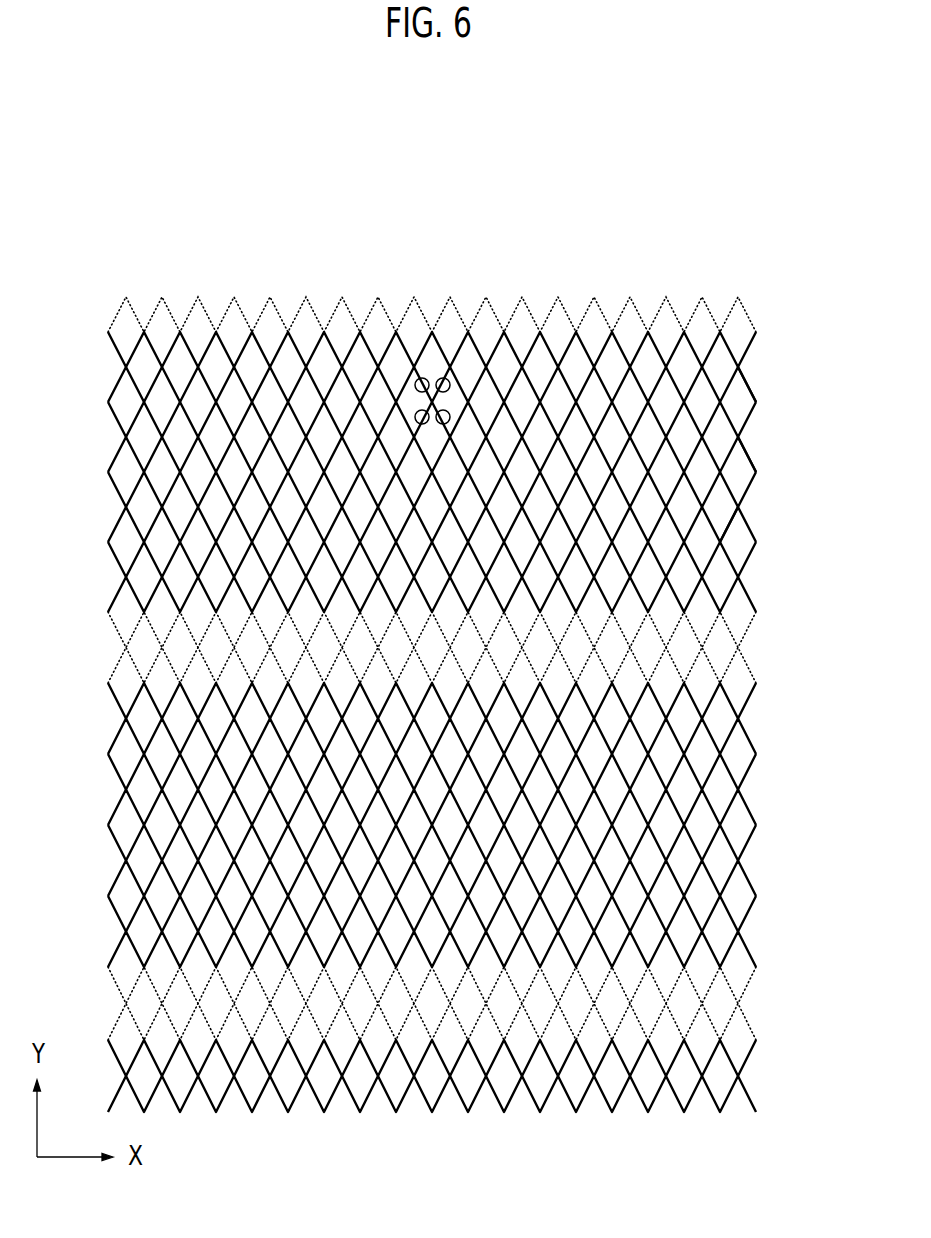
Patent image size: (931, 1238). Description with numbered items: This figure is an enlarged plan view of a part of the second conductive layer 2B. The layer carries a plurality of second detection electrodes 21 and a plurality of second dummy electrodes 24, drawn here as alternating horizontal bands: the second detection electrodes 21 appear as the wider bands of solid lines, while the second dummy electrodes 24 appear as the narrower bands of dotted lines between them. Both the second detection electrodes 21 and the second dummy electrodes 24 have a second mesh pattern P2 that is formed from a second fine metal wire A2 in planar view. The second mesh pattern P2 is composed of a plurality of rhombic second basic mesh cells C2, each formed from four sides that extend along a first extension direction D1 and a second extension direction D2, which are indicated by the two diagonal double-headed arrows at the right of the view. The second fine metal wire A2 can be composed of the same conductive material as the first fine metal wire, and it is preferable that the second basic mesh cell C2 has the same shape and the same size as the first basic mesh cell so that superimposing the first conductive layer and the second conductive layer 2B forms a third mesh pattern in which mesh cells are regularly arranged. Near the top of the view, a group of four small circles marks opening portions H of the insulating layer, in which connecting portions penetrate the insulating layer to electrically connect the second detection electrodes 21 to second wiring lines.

The second conductive layer 2B is at (445, 680).
The second detection electrode 21 is at (107, 332).
The second dummy electrode 24 is at (107, 612).
The second fine metal wire A2 is at (745, 380).
The second mesh pattern P2 is at (745, 450).
The second basic mesh cell C2 is at (737, 537).
The opening portion H is at (441, 383).
The first extension direction D1 is at (792, 601).
The second extension direction D2 is at (771, 729).